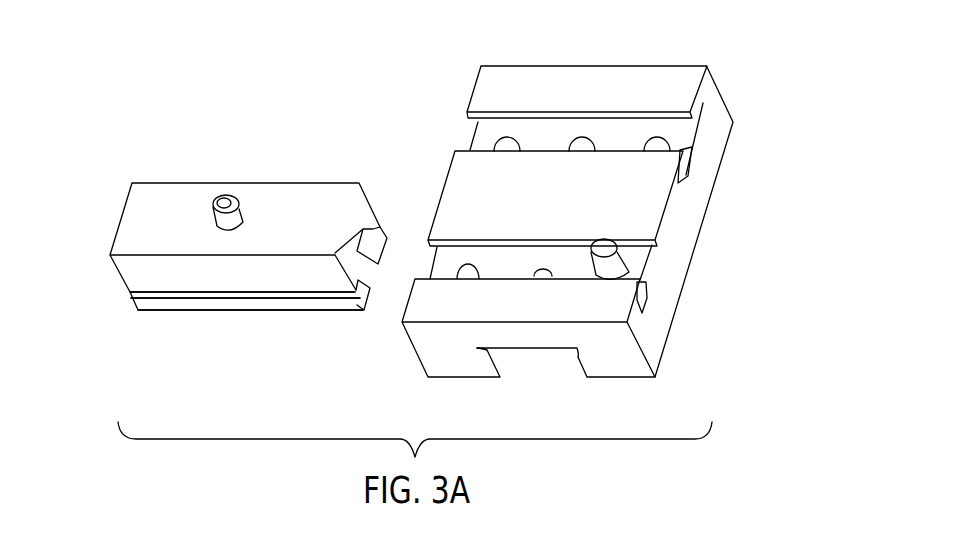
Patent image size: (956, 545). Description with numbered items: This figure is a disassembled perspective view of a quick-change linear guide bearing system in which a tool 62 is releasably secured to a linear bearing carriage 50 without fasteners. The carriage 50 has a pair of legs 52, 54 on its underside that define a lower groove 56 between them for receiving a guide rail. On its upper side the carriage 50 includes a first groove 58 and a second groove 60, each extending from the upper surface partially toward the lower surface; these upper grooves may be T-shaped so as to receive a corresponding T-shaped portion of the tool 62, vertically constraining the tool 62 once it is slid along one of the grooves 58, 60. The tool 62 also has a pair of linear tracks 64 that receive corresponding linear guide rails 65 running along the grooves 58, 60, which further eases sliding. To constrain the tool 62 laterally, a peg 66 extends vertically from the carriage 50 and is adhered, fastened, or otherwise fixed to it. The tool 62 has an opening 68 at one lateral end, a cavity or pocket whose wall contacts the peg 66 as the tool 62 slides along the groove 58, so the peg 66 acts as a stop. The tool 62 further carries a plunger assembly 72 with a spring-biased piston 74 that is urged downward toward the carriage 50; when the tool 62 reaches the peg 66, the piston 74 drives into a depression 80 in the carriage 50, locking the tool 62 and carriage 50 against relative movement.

The linear bearing carriage 50 is at (762, 66).
The leg 52 is at (622, 365).
The leg 54 is at (455, 365).
The lower groove 56 is at (533, 370).
The first groove 58 is at (658, 271).
The second groove 60 is at (697, 147).
The tool 62 is at (303, 132).
The linear track 64 is at (118, 300).
The linear guide rail 65 is at (638, 292).
The peg 66 is at (617, 263).
The opening 68 is at (393, 273).
The plunger assembly 72 is at (197, 196).
The piston 74 is at (238, 212).
The depression 80 is at (542, 269).